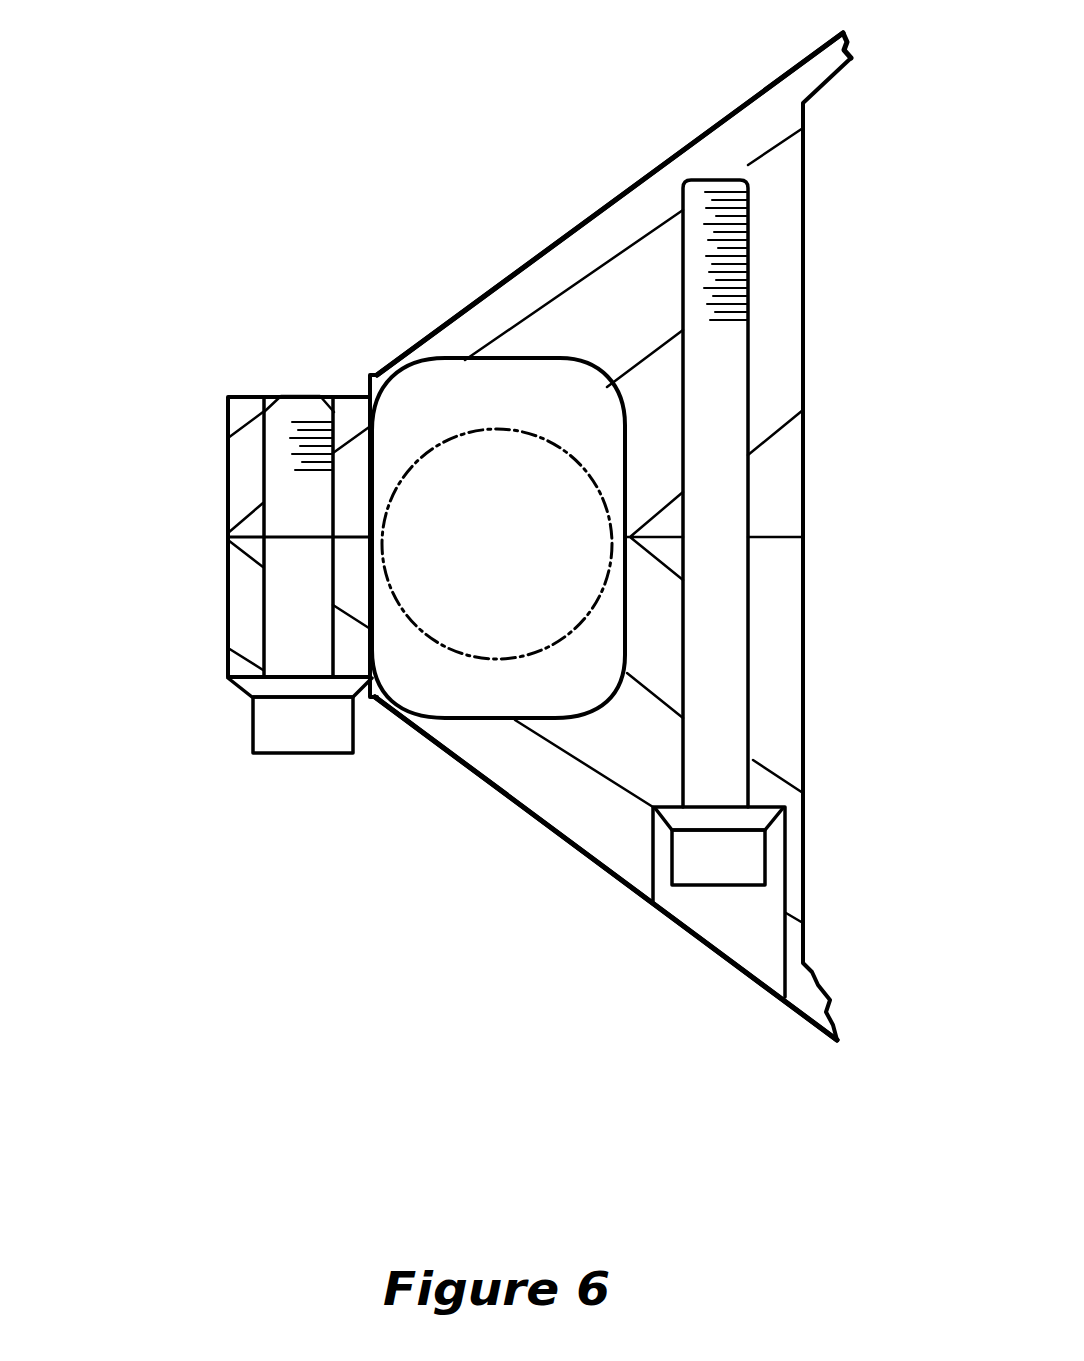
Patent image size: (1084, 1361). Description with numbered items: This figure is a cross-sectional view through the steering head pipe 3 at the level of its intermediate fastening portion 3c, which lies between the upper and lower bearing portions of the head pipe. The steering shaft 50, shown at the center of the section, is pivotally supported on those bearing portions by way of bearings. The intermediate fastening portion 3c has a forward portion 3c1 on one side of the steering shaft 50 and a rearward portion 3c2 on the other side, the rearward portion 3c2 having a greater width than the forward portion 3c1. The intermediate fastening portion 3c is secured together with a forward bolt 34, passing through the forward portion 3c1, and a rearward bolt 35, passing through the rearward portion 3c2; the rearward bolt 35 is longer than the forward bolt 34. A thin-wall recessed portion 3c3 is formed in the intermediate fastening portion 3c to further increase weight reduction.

The steering head pipe 3 is at (427, 313).
The intermediate fastening portion 3c is at (543, 278).
The forward portion 3c1 is at (248, 477).
The rearward portion 3c2 is at (730, 150).
The thin-wall recessed portion 3c3 is at (560, 363).
The steering shaft 50 is at (610, 572).
The forward bolt 34 is at (283, 725).
The rearward bolt 35 is at (738, 857).